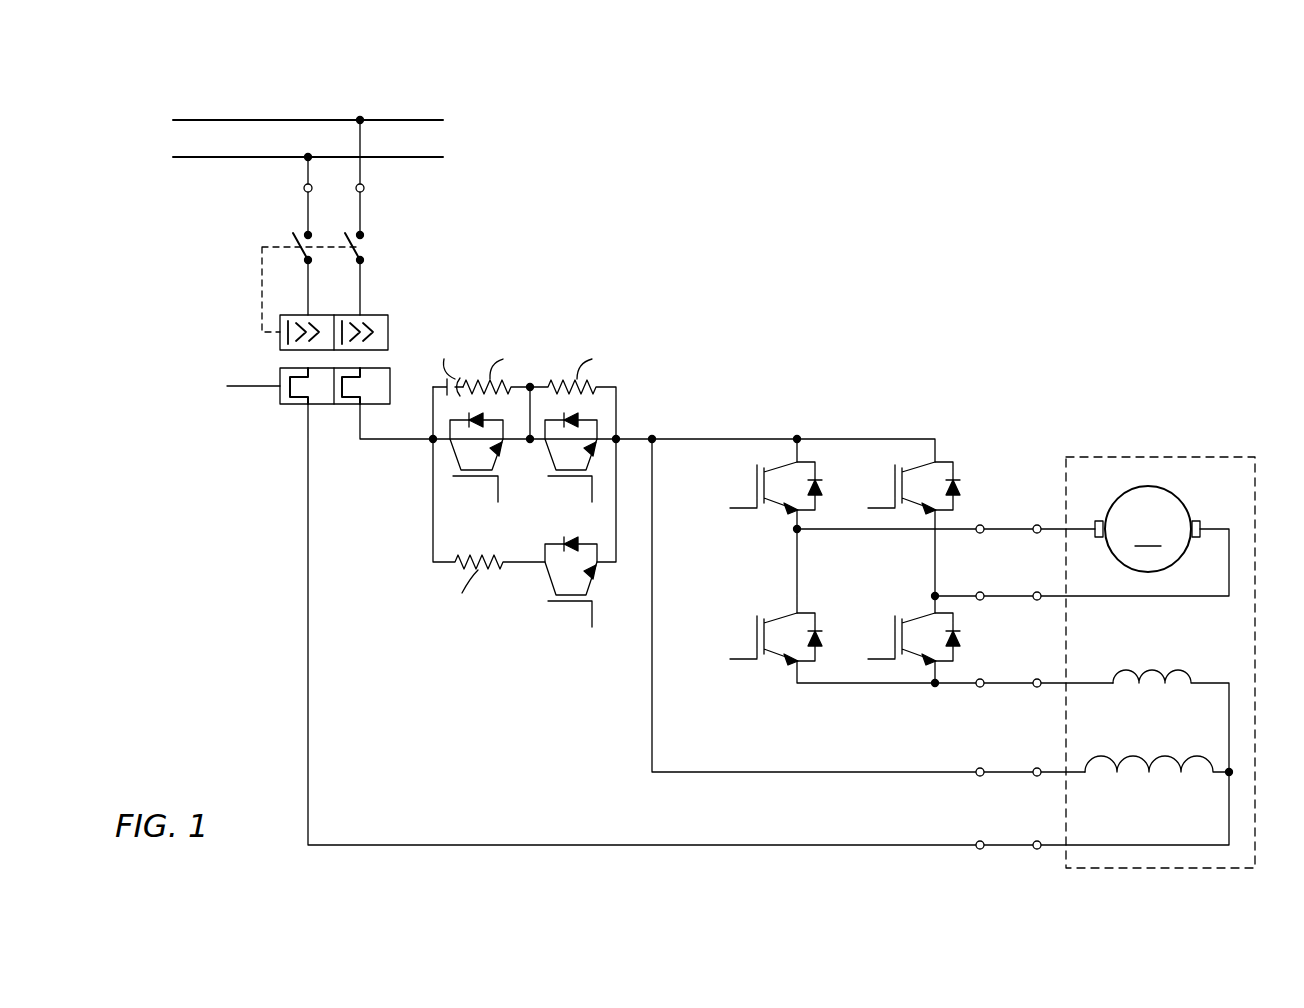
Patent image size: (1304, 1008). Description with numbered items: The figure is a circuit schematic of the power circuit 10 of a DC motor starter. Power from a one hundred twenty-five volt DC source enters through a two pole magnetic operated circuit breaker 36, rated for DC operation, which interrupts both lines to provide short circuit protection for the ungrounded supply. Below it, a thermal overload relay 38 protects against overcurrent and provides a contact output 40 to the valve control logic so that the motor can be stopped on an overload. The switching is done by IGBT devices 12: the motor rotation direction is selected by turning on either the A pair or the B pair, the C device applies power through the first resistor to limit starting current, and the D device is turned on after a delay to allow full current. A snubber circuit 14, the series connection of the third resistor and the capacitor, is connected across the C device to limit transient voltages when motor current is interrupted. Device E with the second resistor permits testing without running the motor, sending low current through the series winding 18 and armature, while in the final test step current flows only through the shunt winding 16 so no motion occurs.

The power circuit 10 is at (514, 737).
The IGBT devices 12 is at (473, 479).
The snubber circuit 14 is at (466, 362).
The shunt winding 16 is at (1137, 758).
The series winding 18 is at (1152, 670).
The magnetic operated circuit breaker 36 is at (374, 246).
The thermal overload relay 38 is at (293, 405).
The contact output 40 is at (247, 385).